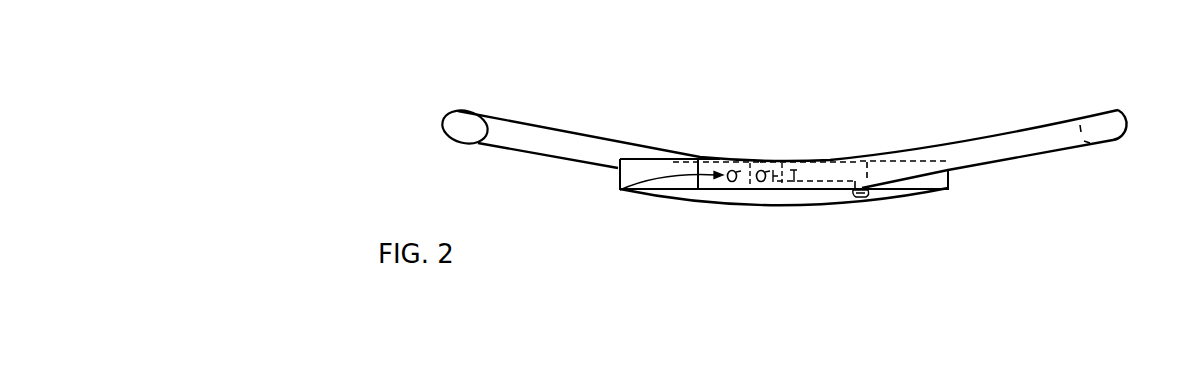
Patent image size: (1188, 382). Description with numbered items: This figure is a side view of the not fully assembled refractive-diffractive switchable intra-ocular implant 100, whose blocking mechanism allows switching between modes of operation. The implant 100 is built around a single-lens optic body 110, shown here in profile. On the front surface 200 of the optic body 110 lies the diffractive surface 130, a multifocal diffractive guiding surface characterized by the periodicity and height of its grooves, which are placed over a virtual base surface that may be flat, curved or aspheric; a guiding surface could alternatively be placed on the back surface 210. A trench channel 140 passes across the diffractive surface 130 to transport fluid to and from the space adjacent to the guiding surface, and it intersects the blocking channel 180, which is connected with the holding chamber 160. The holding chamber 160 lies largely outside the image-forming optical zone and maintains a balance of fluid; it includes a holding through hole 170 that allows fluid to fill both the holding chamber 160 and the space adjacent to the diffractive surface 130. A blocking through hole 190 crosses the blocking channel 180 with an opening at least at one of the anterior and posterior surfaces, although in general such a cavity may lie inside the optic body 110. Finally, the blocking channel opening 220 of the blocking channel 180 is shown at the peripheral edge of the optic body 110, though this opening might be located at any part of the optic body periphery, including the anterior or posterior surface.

The refractive-diffractive switchable intra-ocular implant 100 is at (1078, 62).
The optic body 110 is at (958, 179).
The diffractive surface 130 is at (742, 153).
The trench channel 140 is at (784, 152).
The holding chamber 160 is at (841, 164).
The holding through hole 170 is at (859, 207).
The blocking channel 180 is at (727, 194).
The blocking through hole 190 is at (749, 200).
The front surface 200 is at (652, 153).
The back surface 210 is at (892, 210).
The blocking channel opening 220 is at (620, 190).